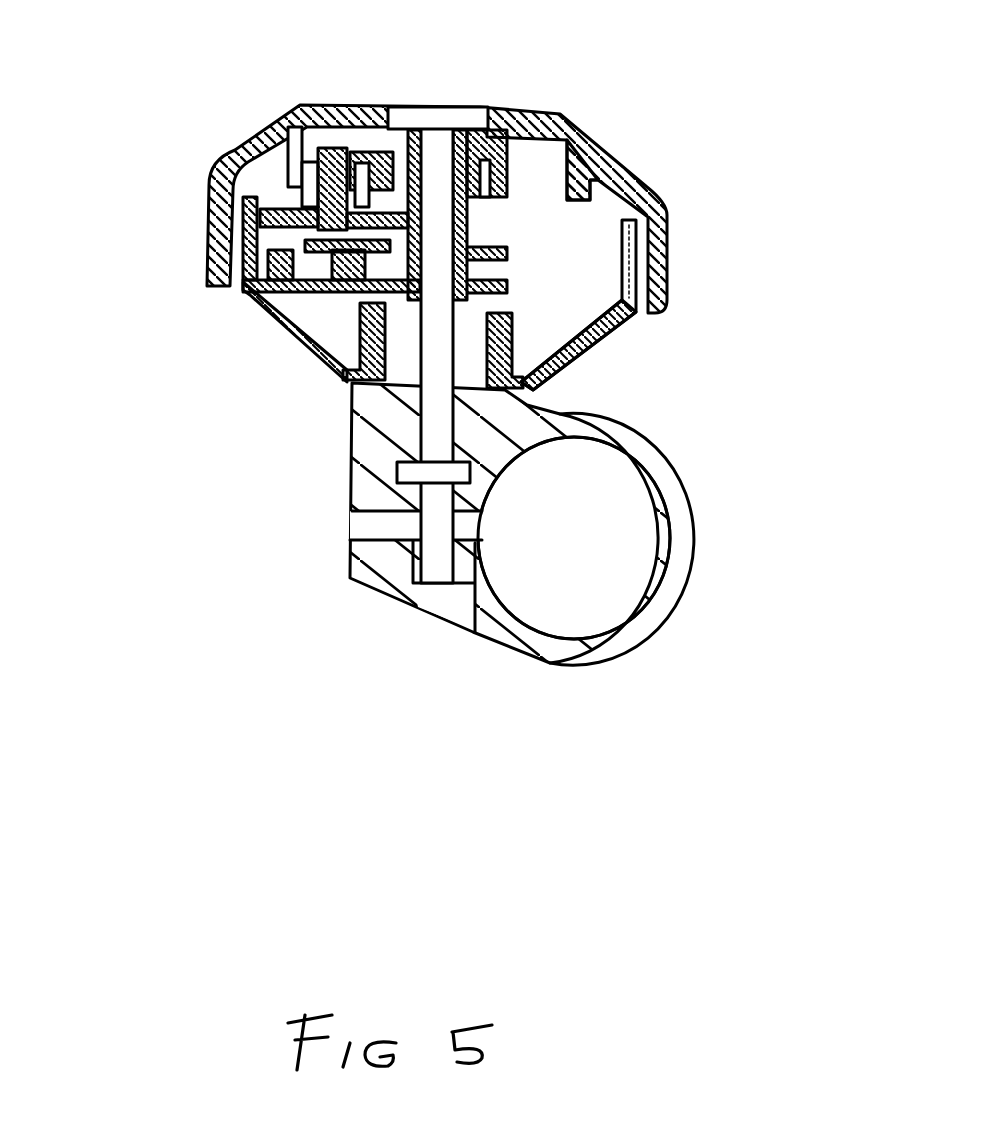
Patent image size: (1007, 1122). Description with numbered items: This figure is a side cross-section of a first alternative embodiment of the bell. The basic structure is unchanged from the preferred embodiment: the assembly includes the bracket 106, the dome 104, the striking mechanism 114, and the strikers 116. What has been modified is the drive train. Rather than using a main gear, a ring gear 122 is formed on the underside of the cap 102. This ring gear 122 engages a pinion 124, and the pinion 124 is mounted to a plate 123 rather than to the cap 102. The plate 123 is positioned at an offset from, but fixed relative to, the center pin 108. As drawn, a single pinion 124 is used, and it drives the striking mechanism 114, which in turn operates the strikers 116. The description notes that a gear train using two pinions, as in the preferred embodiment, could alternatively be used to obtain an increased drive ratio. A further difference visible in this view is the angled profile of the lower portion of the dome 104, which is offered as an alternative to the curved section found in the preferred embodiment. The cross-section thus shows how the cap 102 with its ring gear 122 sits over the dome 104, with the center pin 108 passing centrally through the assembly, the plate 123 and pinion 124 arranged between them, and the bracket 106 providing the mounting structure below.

The cap 102 is at (670, 247).
The dome 104 is at (593, 347).
The bracket 106 is at (667, 618).
The center pin 108 is at (447, 110).
The striking mechanism 114 is at (276, 330).
The strikers 116 is at (253, 297).
The ring gear 122 is at (290, 118).
The plate 123 is at (340, 112).
The pinion 124 is at (247, 223).